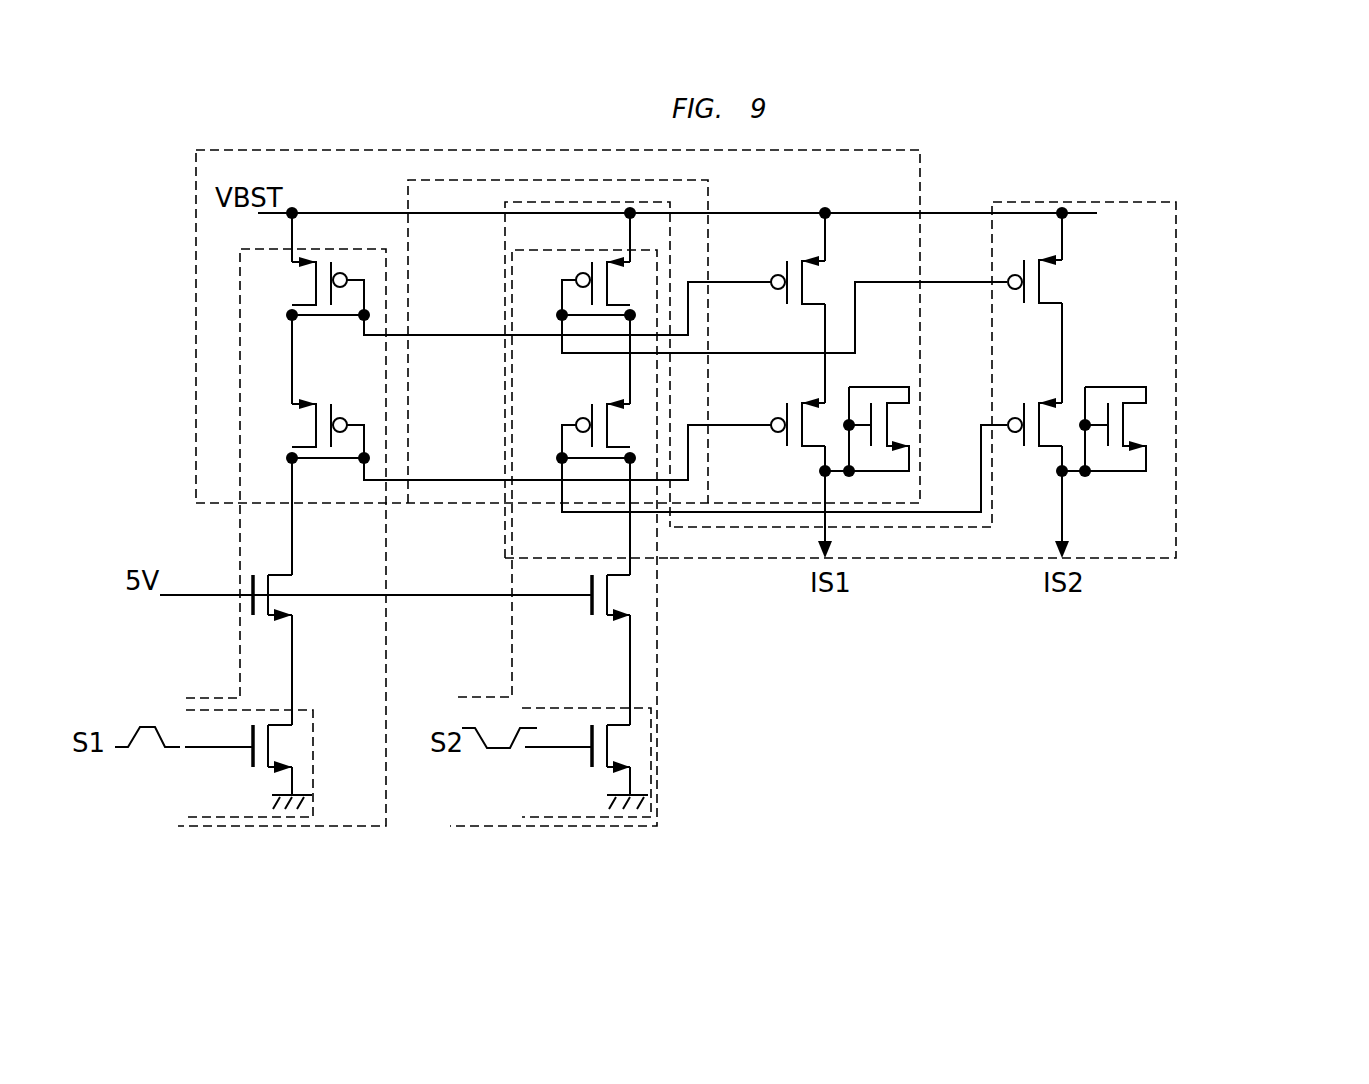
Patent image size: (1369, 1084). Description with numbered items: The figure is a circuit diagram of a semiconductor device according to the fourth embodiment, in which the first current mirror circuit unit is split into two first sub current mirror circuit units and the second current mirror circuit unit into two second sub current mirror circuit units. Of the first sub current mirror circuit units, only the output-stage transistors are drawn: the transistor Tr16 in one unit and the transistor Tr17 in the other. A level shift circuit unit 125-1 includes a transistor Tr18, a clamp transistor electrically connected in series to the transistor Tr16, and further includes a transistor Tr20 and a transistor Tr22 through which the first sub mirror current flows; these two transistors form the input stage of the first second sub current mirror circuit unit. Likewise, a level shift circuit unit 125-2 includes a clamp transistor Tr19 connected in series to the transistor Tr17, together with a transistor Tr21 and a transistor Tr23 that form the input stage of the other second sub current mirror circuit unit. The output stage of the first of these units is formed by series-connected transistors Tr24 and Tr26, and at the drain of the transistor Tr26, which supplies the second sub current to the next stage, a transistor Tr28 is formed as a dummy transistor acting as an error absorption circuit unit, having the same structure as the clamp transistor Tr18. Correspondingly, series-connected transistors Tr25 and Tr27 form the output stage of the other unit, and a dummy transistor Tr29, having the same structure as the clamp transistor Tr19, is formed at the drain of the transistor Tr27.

The transistor Tr16 is at (252, 769).
The transistor Tr17 is at (591, 768).
The transistor Tr18 is at (252, 612).
The transistor Tr19 is at (591, 605).
The transistor Tr20 is at (300, 438).
The transistor Tr21 is at (587, 410).
The transistor Tr22 is at (300, 296).
The transistor Tr23 is at (587, 268).
The transistor Tr24 is at (780, 266).
The transistor Tr25 is at (1065, 288).
The transistor Tr26 is at (786, 406).
The transistor Tr27 is at (1023, 447).
The transistor Tr28 is at (910, 422).
The transistor Tr29 is at (1148, 424).
The level shift circuit unit 125-1 is at (240, 662).
The level shift circuit unit 125-2 is at (658, 671).